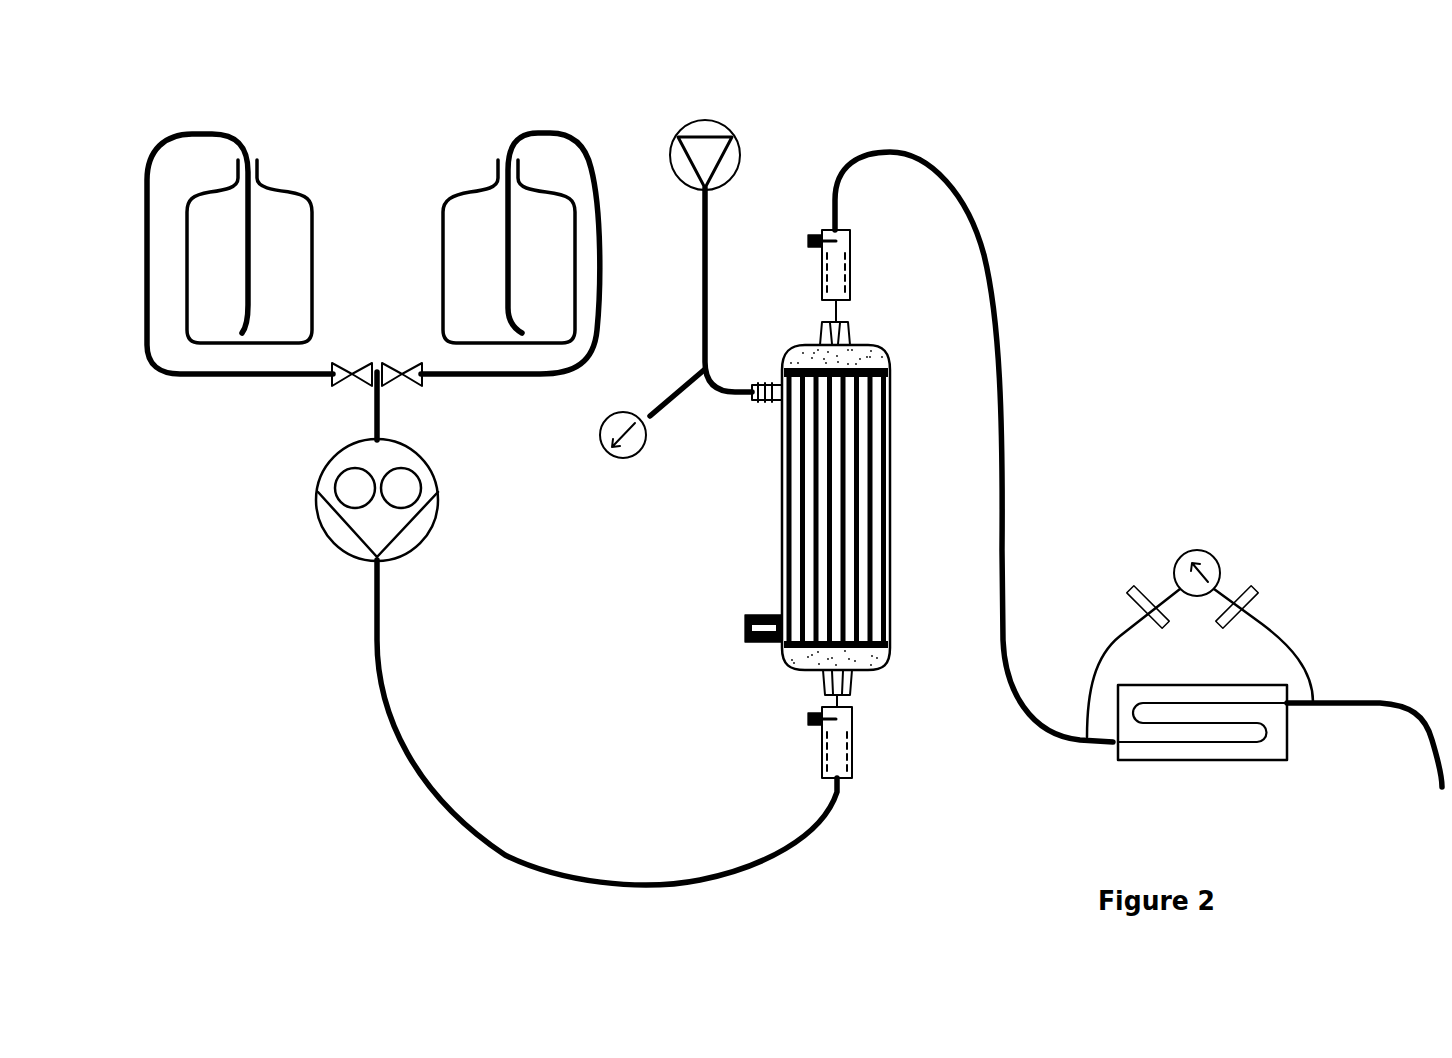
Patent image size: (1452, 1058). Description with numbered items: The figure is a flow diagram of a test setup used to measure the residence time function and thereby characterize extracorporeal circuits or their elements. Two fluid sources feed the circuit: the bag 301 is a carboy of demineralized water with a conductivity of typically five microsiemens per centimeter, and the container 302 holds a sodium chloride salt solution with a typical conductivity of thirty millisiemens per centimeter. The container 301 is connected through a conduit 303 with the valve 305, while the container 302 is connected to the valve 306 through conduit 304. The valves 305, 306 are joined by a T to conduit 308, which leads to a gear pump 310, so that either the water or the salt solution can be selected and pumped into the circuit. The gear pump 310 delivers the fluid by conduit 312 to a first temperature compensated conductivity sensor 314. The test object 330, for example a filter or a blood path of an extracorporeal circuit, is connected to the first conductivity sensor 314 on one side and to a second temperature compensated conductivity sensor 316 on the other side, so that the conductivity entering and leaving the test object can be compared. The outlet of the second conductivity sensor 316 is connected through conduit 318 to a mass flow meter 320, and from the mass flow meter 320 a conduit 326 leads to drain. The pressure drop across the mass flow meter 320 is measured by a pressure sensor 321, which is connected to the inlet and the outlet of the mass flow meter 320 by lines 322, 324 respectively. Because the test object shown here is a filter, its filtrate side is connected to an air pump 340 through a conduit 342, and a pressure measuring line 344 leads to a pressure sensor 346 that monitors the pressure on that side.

The bag 301 is at (280, 183).
The container 302 is at (478, 185).
The conduit 303 is at (218, 382).
The conduit 304 is at (577, 372).
The valve 305 is at (353, 380).
The valve 306 is at (423, 382).
The conduit 308 is at (383, 410).
The gear pump 310 is at (442, 523).
The conduit 312 is at (423, 790).
The first temperature compensated conductivity sensor 314 is at (855, 743).
The second temperature compensated conductivity sensor 316 is at (857, 265).
The conduit 318 is at (1007, 437).
The mass flow meter 320 is at (1225, 763).
The pressure sensor 321 is at (1193, 547).
The line 322 is at (1100, 665).
The line 324 is at (1270, 627).
The conduit 326 is at (1413, 720).
The test object 330 is at (778, 510).
The air pump 340 is at (738, 135).
The conduit 342 is at (712, 292).
The pressure measuring line 344 is at (680, 393).
The pressure sensor 346 is at (625, 460).